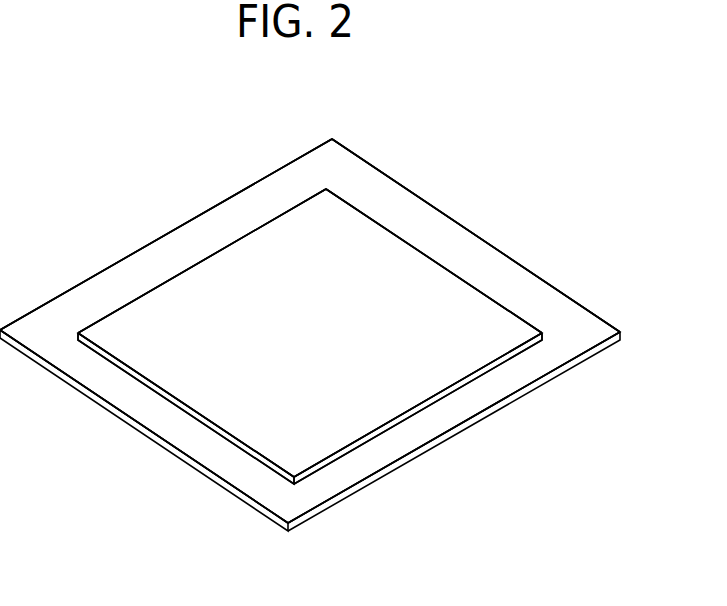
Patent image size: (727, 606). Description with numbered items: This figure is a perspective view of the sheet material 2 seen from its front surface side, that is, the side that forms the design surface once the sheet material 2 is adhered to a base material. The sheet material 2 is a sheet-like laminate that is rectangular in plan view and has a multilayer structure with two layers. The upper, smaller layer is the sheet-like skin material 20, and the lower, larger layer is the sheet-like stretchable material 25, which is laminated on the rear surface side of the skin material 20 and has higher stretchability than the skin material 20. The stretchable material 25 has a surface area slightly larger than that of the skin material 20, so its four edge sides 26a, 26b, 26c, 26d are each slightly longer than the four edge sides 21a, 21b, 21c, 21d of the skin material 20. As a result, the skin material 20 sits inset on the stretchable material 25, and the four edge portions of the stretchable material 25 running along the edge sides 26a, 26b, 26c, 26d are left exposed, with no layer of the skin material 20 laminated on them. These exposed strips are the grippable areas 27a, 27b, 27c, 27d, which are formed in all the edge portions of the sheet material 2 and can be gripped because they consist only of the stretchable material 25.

The sheet material 2 is at (540, 175).
The skin material 20 is at (318, 205).
The edge side of skin material 21a is at (233, 243).
The edge side of skin material 21b is at (135, 377).
The edge side of skin material 21c is at (457, 385).
The edge side of skin material 21d is at (455, 275).
The stretchable material 25 is at (333, 158).
The edge side of stretchable material 26a is at (173, 227).
The edge side of stretchable material 26b is at (174, 455).
The edge side of stretchable material 26c is at (427, 452).
The edge side of stretchable material 26d is at (430, 205).
The grippable area 27a is at (142, 273).
The grippable area 27b is at (212, 450).
The grippable area 27c is at (383, 448).
The grippable area 27d is at (510, 277).